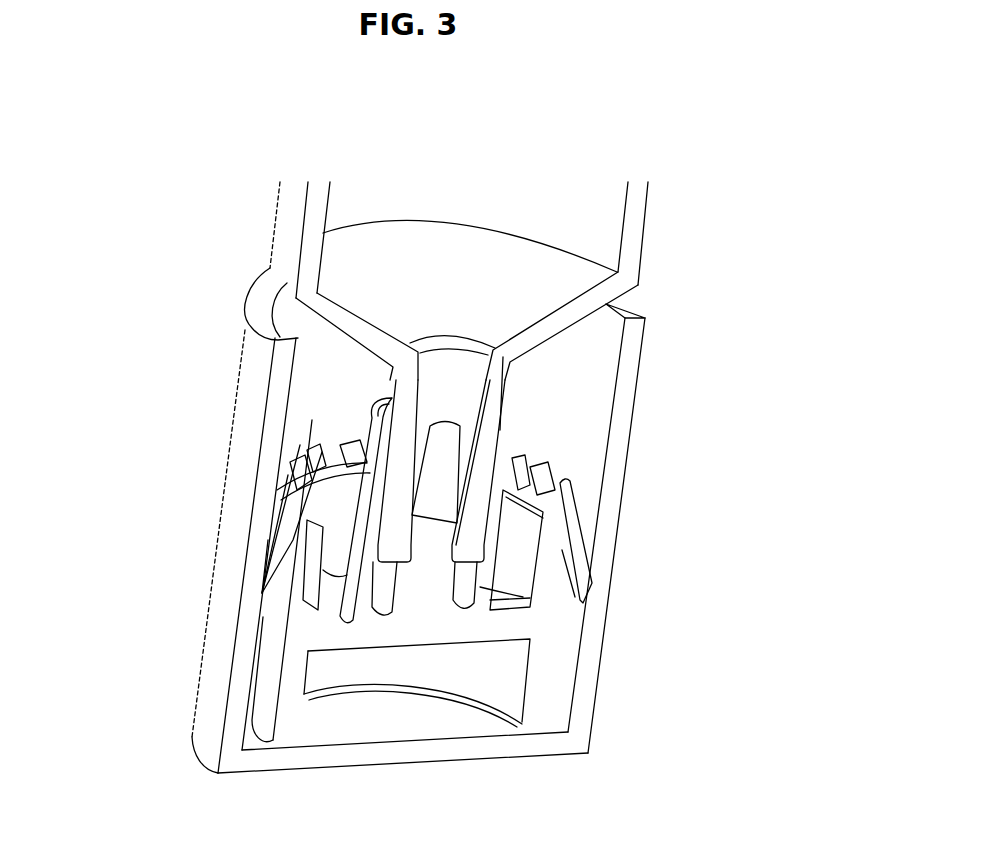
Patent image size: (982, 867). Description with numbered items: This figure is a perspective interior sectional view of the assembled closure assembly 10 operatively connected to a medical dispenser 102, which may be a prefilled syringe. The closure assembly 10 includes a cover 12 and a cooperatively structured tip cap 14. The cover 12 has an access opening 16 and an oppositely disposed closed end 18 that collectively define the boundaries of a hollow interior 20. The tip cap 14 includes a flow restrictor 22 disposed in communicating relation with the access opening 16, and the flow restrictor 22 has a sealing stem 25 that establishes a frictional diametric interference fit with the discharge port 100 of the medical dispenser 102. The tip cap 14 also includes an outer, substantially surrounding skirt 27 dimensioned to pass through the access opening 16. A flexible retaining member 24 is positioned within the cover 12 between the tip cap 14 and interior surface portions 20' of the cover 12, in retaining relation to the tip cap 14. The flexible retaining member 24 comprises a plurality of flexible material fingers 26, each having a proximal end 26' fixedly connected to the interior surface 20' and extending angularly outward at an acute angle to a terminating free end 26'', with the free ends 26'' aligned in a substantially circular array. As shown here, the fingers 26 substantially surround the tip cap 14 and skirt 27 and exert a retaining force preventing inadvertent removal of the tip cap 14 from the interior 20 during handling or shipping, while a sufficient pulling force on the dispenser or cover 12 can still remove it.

The closure assembly 10 is at (700, 403).
The cover 12 is at (602, 674).
The tip cap 14 is at (282, 644).
The access opening 16 is at (645, 318).
The closed end 18 is at (528, 757).
The hollow interior 20 is at (413, 760).
The interior surface 20' is at (636, 515).
The flow restrictor 22 is at (560, 401).
The flexible retaining member 24 is at (588, 503).
The sealing stem 25 is at (444, 440).
The flexible material fingers 26 is at (264, 527).
The proximal end 26' is at (180, 576).
The free end 26'' is at (248, 463).
The skirt 27 is at (533, 640).
The discharge port 100 is at (410, 390).
The medical dispenser 102 is at (650, 214).